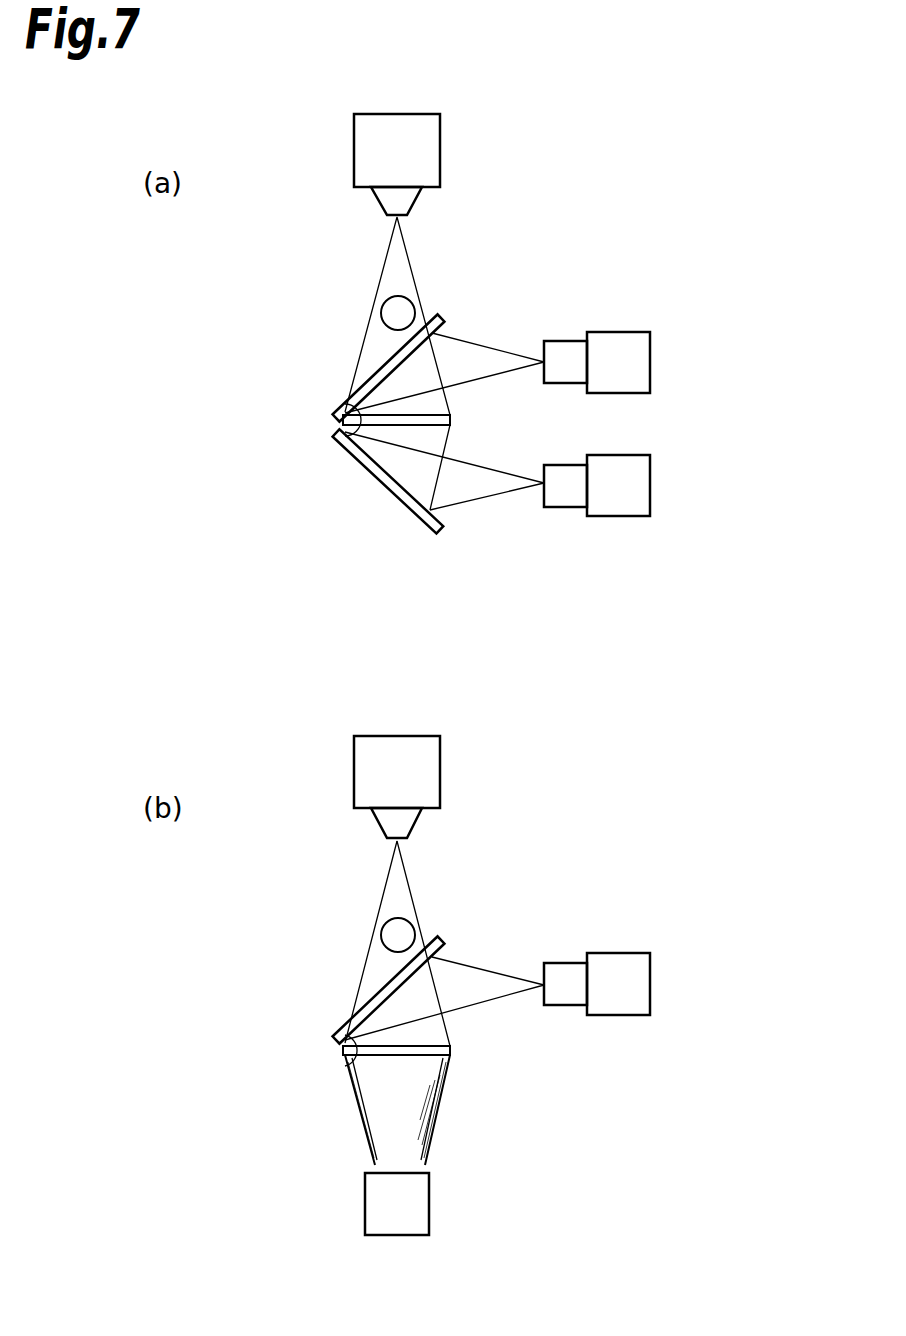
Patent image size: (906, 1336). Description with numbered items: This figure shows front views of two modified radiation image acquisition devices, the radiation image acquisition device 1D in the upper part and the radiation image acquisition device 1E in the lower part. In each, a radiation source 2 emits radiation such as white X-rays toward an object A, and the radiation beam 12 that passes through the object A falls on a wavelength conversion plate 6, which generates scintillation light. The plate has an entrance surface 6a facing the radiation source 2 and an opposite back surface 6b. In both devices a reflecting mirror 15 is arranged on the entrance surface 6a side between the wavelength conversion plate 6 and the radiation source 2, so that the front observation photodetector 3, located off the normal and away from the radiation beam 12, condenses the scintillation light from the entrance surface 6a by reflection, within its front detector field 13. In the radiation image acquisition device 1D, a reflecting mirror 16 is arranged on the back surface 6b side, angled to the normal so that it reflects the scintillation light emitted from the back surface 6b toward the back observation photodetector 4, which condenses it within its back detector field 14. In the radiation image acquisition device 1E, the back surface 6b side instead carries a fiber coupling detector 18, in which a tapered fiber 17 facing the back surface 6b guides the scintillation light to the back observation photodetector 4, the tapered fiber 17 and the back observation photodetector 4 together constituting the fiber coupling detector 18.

The radiation image acquisition device 1D is at (647, 183).
The radiation image acquisition device 1E is at (645, 830).
The radiation source 2 is at (405, 114).
The front observation photodetector 3 is at (650, 362).
The back observation photodetector 4 is at (650, 487).
The wavelength conversion plate 6 is at (458, 420).
The entrance surface 6a is at (345, 413).
The back surface 6b is at (345, 432).
The radiation beam 12 is at (390, 268).
The front detector field 13 is at (487, 353).
The back detector field 14 is at (483, 488).
The reflecting mirror 15 is at (442, 316).
The reflecting mirror 16 is at (440, 532).
The tapered fiber 17 is at (437, 1110).
The fiber coupling detector 18 is at (520, 1117).
The object A is at (407, 297).